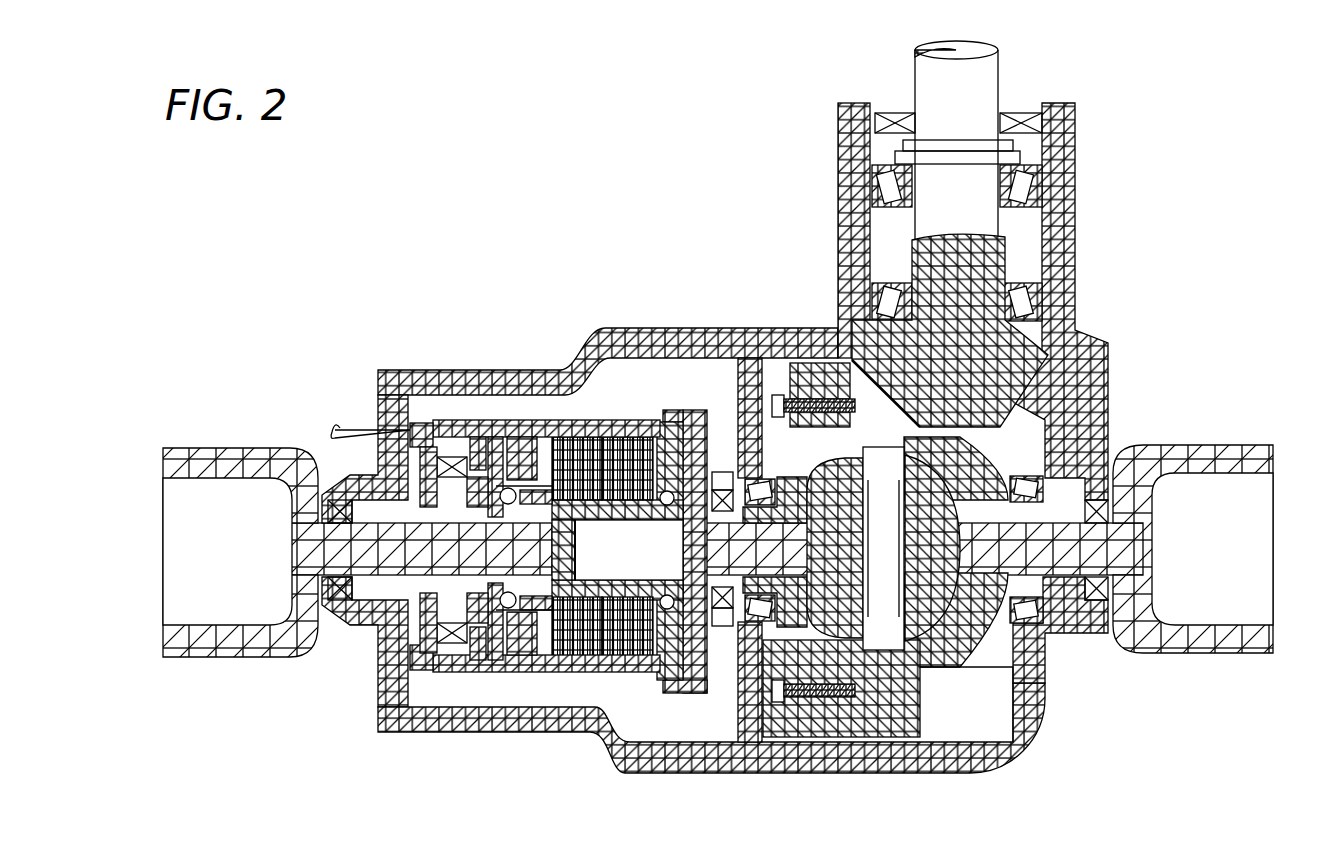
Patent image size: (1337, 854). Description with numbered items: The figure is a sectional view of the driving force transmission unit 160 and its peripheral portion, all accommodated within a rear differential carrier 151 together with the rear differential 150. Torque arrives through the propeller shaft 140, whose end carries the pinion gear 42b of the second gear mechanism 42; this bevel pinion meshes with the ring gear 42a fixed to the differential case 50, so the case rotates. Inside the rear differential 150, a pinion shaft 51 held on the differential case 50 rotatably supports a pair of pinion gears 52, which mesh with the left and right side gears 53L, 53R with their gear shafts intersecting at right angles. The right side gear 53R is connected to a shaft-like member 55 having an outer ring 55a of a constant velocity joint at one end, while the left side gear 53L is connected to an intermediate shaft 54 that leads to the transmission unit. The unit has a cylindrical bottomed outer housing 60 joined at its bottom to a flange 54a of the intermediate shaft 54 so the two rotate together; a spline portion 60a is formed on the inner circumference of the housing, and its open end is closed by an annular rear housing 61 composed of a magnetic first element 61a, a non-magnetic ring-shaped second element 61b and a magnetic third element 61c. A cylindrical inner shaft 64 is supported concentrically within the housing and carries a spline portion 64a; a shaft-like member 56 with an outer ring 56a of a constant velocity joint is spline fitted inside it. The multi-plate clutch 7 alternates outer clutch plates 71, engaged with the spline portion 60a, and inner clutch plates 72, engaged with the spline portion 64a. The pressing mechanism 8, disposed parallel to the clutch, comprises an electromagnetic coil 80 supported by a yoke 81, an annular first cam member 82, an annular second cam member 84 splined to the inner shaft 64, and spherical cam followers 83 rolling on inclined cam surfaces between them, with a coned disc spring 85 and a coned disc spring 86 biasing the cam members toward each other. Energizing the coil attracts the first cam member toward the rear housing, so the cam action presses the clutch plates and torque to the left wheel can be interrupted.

The propeller shaft 140 is at (988, 88).
The rear differential carrier 151 is at (1058, 197).
The second gear mechanism 42 is at (887, 323).
The ring gear 42a is at (840, 372).
The pinion gear 42b is at (870, 330).
The multi-plate clutch 7 is at (603, 453).
The outer clutch plates 71 is at (565, 450).
The inner clutch plates 72 is at (590, 450).
The spline portion 60a is at (600, 430).
The outer housing 60 is at (655, 430).
The driving force transmission unit 160 is at (427, 410).
The rear housing 61 is at (535, 480).
The third element 61c is at (440, 498).
The first element 61a is at (483, 455).
The second element 61b is at (498, 468).
The spline portion 64a is at (577, 580).
The inner shaft 64 is at (637, 580).
The cam followers 83 is at (510, 607).
The outer ring 56a is at (258, 645).
The shaft-like member 56 is at (340, 565).
The yoke 81 is at (393, 730).
The electromagnetic coil 80 is at (445, 680).
The first cam member 82 is at (490, 680).
The second cam member 84 is at (550, 640).
The coned disc spring 85 is at (478, 680).
The coned disc spring 86 is at (530, 685).
The pressing mechanism 8 is at (575, 690).
The flange 54a is at (680, 690).
The intermediate shaft 54 is at (733, 678).
The left side gear 53L is at (815, 618).
The pinion gears 52 is at (857, 573).
The pinion shaft 51 is at (884, 645).
The rear differential 150 is at (958, 675).
The differential case 50 is at (985, 640).
The shaft-like member 55 is at (1035, 585).
The outer ring 55a is at (1205, 650).
The right side gear 53R is at (1030, 478).